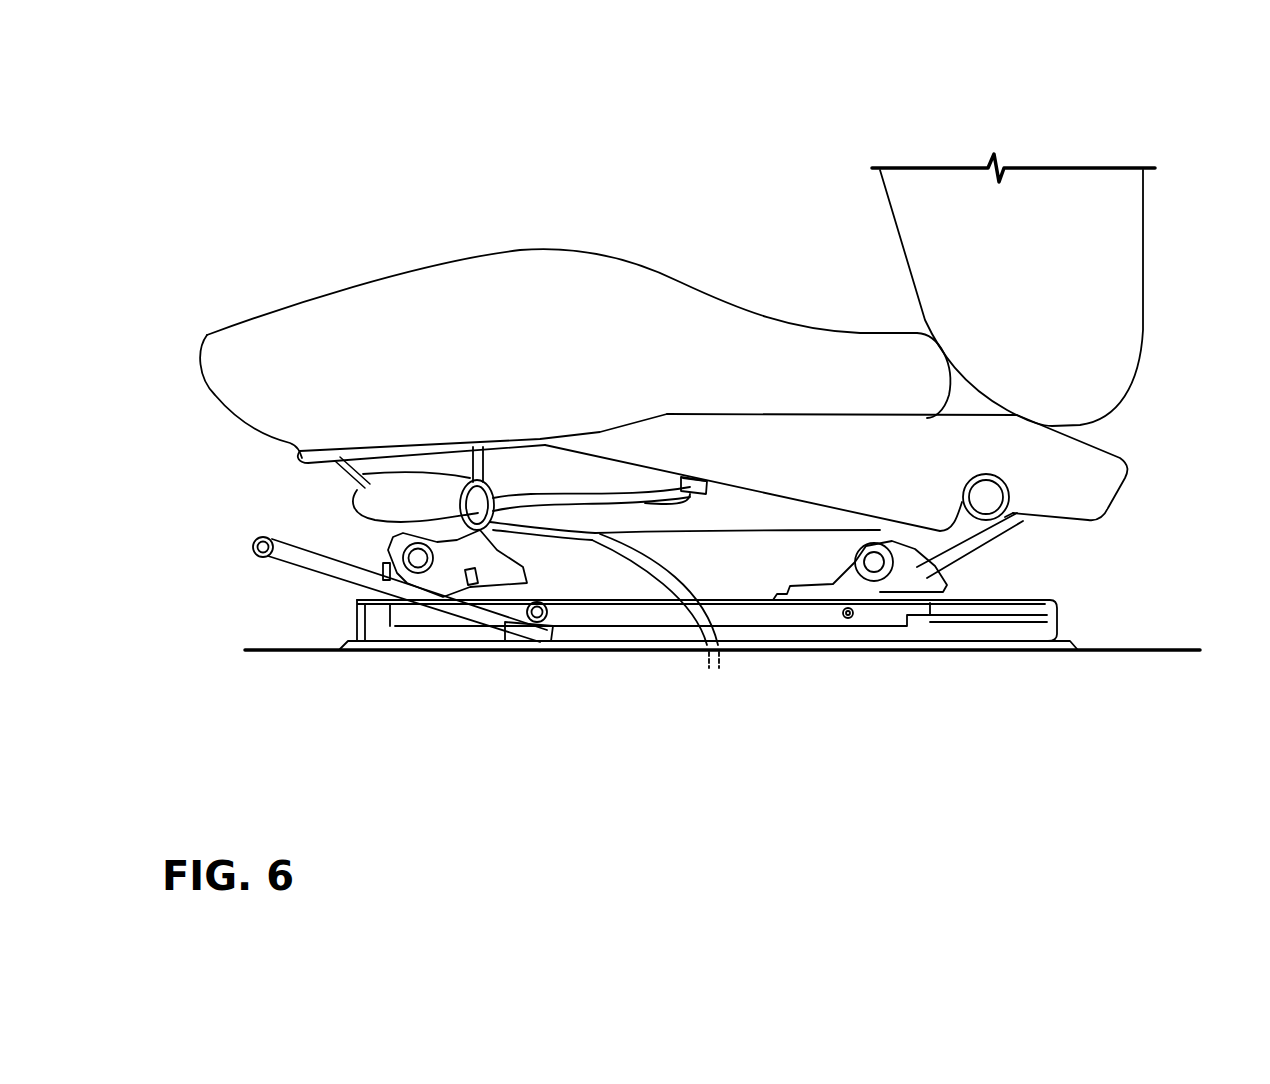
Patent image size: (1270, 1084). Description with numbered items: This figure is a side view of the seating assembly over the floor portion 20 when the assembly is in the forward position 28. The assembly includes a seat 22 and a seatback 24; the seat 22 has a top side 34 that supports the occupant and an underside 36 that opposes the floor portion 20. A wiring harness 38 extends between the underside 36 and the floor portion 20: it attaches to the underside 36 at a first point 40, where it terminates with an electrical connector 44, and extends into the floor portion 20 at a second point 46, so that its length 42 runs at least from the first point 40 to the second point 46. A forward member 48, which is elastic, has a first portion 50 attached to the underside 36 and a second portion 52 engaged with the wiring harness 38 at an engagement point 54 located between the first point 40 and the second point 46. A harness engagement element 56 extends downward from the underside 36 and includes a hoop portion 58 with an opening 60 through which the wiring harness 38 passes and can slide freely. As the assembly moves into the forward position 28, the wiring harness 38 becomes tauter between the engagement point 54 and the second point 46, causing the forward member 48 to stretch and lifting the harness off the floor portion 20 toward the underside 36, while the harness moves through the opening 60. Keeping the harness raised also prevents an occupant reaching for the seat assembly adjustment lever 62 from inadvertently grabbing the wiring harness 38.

The floor portion 20 is at (287, 648).
The seat 22 is at (860, 362).
The seatback 24 is at (1046, 210).
The forward position 28 is at (622, 358).
The top side 34 is at (516, 250).
The underside 36 is at (833, 508).
The wiring harness 38 is at (710, 613).
The first point 40 is at (708, 498).
The length 42 is at (590, 540).
The electrical connector 44 is at (690, 487).
The second point 46 is at (707, 637).
The forward member 48 is at (365, 469).
The first portion 50 is at (340, 455).
The second portion 52 is at (367, 463).
The engagement point 54 is at (357, 490).
The harness engagement element 56 is at (482, 450).
The hoop portion 58 is at (485, 528).
The opening 60 is at (487, 533).
The seat assembly adjustment lever 62 is at (262, 543).